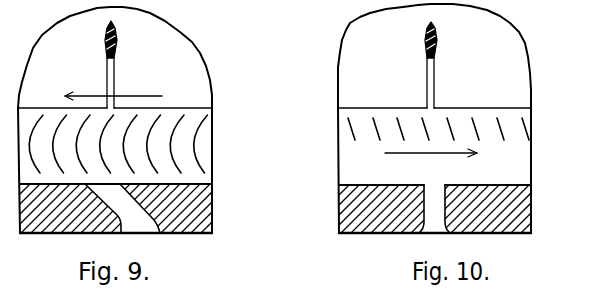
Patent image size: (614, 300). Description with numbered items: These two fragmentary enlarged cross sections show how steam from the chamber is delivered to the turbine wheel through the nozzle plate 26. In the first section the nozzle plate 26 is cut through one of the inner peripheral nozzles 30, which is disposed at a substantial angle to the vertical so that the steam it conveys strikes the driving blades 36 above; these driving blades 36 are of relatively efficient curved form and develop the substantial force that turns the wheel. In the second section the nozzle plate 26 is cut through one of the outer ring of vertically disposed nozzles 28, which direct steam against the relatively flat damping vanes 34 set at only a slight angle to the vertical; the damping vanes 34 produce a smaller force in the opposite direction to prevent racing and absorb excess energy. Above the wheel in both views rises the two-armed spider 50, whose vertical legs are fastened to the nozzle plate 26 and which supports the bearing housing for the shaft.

In FIG. 9, the nozzle plate 26 is at (42, 228).
In FIG. 10, the nozzle plate 26 is at (520, 209).
In FIG. 10, the vertically disposed nozzles 28 is at (437, 229).
In FIG. 9, the inner peripheral nozzles 30 is at (160, 234).
In FIG. 10, the damping vanes 34 is at (502, 128).
In FIG. 9, the driving blades 36 is at (197, 134).
In FIG. 9, the two-armed spider 50 is at (117, 38).
In FIG. 10, the two-armed spider 50 is at (437, 38).